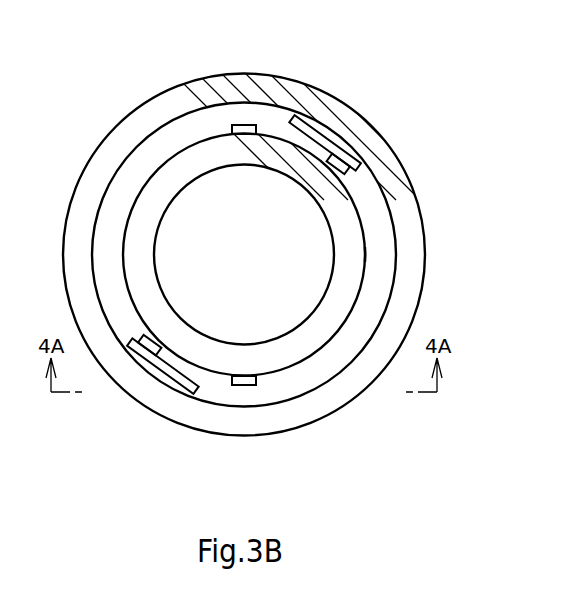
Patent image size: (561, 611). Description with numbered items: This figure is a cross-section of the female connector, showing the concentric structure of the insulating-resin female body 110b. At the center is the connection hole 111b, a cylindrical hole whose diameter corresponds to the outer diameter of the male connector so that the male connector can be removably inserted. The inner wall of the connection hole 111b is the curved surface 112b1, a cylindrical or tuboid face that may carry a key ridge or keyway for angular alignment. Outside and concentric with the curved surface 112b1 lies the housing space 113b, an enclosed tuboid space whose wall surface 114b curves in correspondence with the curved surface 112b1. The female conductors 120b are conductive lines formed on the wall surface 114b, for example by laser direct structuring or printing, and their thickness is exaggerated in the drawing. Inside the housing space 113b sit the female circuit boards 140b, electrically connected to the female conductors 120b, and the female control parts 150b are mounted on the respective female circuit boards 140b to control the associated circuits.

The female body 110b is at (324, 80).
The connection hole 111b is at (177, 223).
The curved surface 112b1 is at (178, 152).
The housing space 113b is at (372, 213).
The wall surface 114b is at (365, 247).
The female conductor 120b is at (244, 125).
The female circuit board 140b is at (305, 125).
The female control part 150b is at (338, 161).